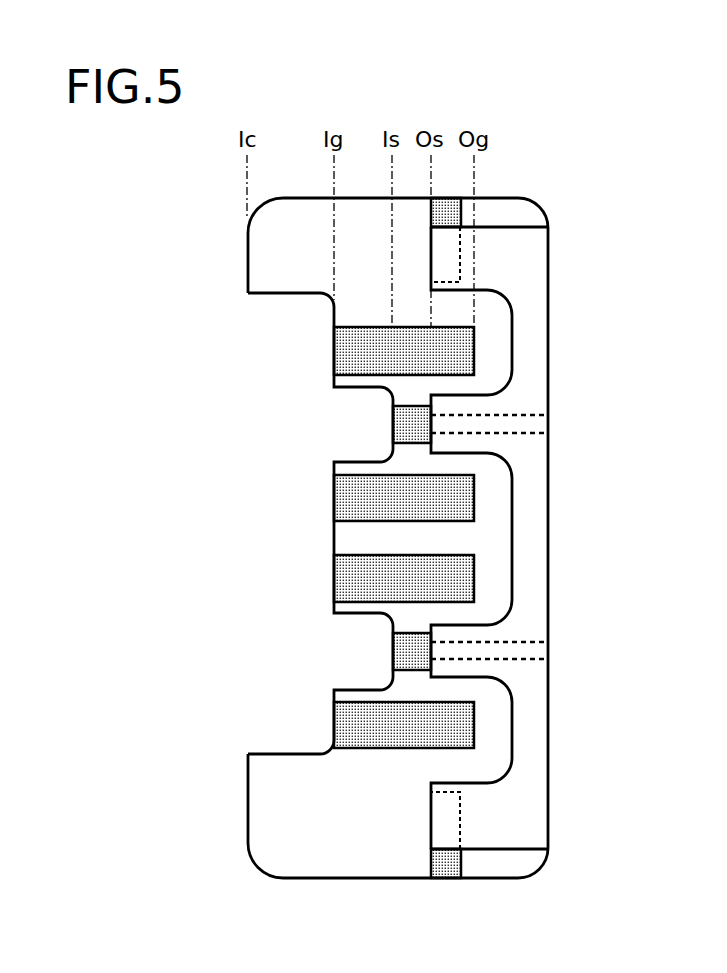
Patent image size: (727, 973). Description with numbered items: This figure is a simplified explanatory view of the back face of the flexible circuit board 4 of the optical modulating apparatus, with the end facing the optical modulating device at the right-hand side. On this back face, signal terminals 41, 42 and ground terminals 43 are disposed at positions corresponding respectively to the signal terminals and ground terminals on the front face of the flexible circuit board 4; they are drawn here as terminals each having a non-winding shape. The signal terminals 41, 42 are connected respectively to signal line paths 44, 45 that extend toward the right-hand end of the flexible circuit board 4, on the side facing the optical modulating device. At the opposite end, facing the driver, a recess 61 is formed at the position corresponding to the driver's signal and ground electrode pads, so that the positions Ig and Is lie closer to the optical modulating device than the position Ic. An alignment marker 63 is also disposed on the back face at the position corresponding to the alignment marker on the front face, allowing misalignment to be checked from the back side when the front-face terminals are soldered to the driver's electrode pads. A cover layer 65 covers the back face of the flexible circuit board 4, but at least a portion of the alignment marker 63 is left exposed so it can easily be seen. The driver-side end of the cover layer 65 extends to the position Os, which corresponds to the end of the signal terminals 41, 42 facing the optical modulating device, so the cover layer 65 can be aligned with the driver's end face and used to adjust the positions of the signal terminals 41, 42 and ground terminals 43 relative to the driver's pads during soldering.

The flexible circuit board 4 is at (538, 203).
The signal terminal 41 is at (402, 655).
The signal terminal 42 is at (402, 427).
The ground terminals 43 is at (342, 352).
The signal line path 44 is at (517, 642).
The signal line path 45 is at (507, 415).
The recess 61 is at (273, 295).
The alignment marker 63 is at (447, 198).
The cover layer 65 is at (535, 245).